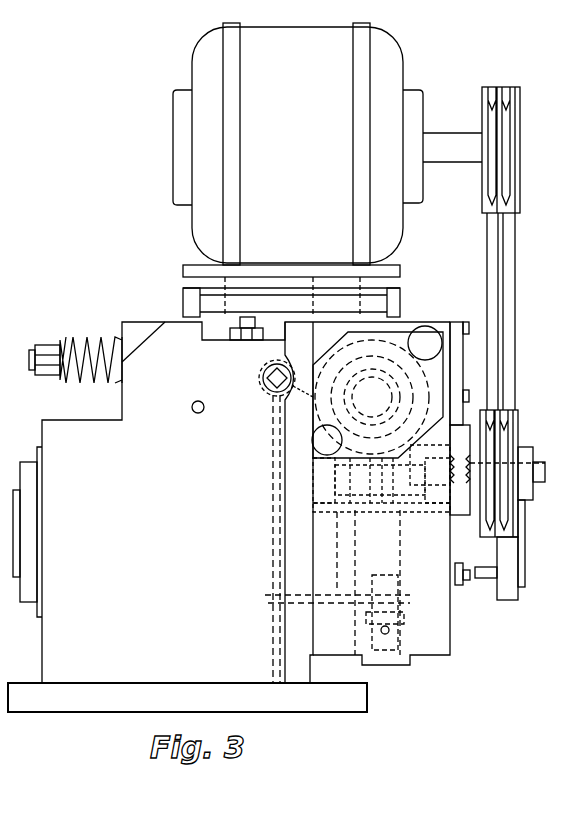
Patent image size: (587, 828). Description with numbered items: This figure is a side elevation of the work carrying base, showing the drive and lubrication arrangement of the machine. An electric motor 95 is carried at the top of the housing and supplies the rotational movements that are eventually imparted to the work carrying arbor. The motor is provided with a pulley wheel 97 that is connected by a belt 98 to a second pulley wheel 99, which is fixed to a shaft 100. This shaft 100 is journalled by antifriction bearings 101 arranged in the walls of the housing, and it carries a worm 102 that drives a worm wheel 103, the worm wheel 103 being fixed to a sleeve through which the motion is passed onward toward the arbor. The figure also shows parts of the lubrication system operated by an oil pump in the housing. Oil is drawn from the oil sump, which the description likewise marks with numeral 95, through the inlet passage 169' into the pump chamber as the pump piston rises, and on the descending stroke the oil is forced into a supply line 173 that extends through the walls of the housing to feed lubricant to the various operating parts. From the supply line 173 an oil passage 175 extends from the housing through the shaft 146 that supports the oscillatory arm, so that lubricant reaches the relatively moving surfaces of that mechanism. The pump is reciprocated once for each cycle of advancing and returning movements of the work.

The electric motor 95 is at (393, 67).
The pulley wheel 97 is at (520, 137).
The belt 98 is at (512, 360).
The pulley wheel 99 is at (520, 428).
The shaft 100 is at (535, 486).
The antifriction bearings 101 is at (322, 500).
The worm 102 is at (410, 500).
The worm wheel 103 is at (405, 327).
The shaft 146 is at (258, 378).
The inlet passage 169' is at (387, 638).
The supply line 173 is at (341, 593).
The oil passage 175 is at (273, 520).